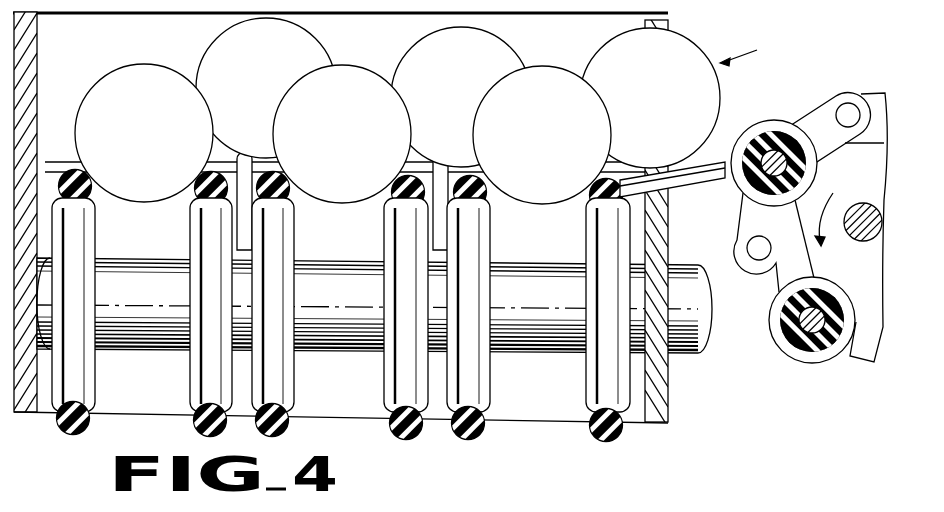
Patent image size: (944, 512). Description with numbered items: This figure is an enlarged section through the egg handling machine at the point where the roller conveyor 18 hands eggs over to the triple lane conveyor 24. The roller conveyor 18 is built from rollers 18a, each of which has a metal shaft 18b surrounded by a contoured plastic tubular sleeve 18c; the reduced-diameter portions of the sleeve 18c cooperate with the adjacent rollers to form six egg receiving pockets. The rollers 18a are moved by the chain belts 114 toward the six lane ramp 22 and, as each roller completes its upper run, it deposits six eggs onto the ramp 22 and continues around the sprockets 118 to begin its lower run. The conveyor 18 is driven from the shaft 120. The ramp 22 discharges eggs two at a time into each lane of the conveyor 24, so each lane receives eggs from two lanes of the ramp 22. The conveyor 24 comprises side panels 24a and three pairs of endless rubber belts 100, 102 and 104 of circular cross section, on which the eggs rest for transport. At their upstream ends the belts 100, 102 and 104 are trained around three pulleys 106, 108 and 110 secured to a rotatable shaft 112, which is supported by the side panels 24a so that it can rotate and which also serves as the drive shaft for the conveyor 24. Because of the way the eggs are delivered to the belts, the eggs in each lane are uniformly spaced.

The conveyor 18 is at (866, 88).
The rollers 18a is at (770, 120).
The metal shaft 18b is at (751, 181).
The contoured plastic tubular sleeve 18c is at (764, 193).
The six lane ramp 22 is at (712, 158).
The triple lane conveyor 24 is at (84, 428).
The side panels 24a is at (660, 389).
The endless rubber belts 100 is at (193, 195).
The endless rubber belts 102 is at (392, 197).
The endless rubber belts 104 is at (588, 199).
The pulley 106 is at (205, 238).
The pulley 108 is at (398, 245).
The pulley 110 is at (592, 245).
The rotatable shaft 112 is at (578, 312).
The chain belts 114 is at (743, 236).
The sprockets 118 is at (872, 266).
The shaft 120 is at (861, 204).